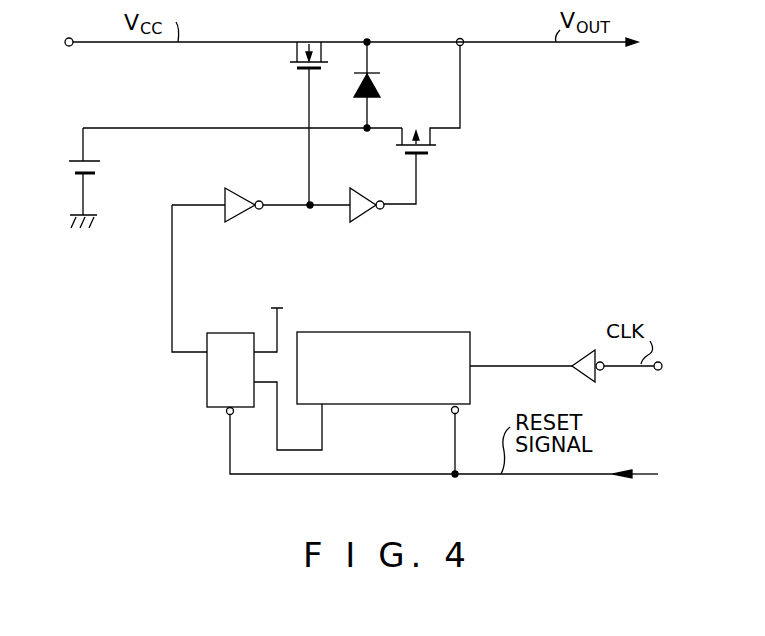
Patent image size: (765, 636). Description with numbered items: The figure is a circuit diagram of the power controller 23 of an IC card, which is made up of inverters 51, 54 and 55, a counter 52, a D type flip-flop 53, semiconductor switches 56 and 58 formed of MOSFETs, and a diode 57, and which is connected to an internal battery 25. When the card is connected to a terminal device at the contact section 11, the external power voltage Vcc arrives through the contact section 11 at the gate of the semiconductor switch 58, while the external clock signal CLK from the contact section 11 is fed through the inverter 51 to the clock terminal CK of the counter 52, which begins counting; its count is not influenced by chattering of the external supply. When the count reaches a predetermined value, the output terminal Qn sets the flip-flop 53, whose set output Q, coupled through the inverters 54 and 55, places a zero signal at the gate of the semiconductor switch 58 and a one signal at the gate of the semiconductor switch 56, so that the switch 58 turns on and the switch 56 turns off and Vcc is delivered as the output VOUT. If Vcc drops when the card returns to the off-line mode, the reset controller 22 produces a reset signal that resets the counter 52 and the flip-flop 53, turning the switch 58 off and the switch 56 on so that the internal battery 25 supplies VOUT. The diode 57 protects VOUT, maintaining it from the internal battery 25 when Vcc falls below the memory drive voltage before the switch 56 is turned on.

The contact section 11 is at (69, 38).
The reset controller 22 is at (679, 475).
The power controller 23 is at (187, 401).
The internal battery 25 is at (102, 172).
The inverter 51 is at (578, 356).
The counter 52 is at (385, 332).
The D type flip-flop 53 is at (232, 333).
The inverter 54 is at (243, 190).
The inverter 55 is at (362, 188).
The semiconductor switch 56 is at (440, 148).
The diode 57 is at (382, 84).
The semiconductor switch 58 is at (312, 40).